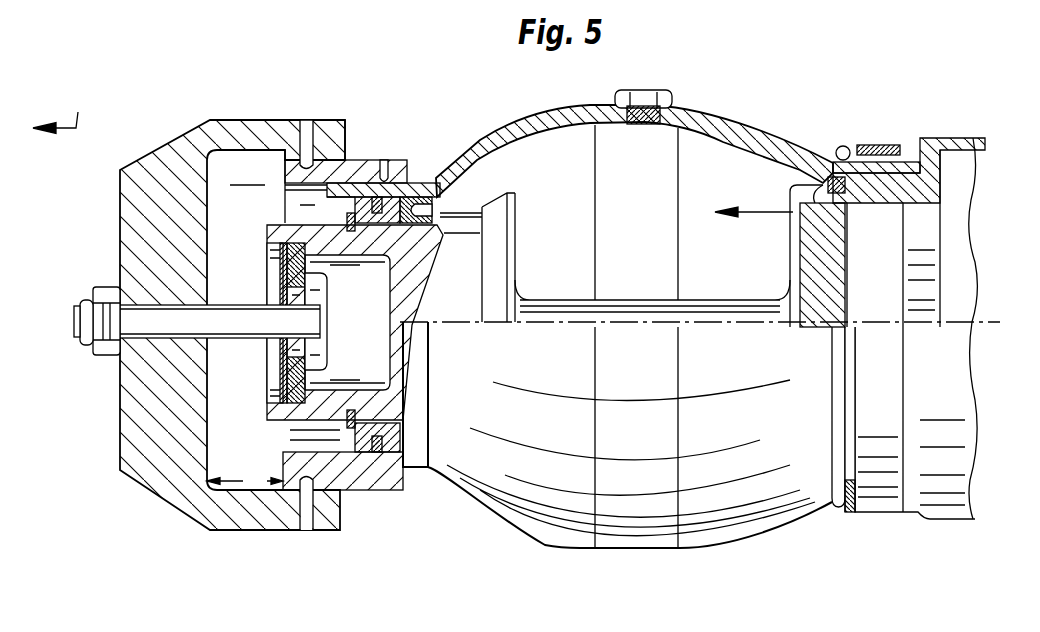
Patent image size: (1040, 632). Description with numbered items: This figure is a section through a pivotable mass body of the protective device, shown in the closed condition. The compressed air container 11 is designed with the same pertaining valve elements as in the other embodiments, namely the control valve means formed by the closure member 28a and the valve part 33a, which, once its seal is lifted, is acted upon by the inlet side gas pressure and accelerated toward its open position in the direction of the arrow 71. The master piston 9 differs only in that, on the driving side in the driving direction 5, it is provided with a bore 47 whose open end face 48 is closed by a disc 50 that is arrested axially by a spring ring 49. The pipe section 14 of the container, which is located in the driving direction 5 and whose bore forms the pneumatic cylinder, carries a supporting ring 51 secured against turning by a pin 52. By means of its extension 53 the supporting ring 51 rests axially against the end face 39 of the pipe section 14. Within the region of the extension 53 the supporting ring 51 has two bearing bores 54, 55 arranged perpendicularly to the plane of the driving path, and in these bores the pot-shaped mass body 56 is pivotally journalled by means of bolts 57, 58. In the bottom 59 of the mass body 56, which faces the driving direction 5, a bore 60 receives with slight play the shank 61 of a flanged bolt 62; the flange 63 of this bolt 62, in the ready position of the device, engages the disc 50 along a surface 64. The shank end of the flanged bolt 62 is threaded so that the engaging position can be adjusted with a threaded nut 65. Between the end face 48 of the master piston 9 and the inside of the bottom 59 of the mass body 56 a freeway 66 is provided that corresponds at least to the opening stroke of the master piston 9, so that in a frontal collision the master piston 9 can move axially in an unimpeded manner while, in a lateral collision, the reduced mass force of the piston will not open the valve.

The driving direction 5 is at (62, 108).
The master piston 9 is at (463, 285).
The compressed air container 11 is at (713, 447).
The pipe section 14 is at (367, 460).
The closure member 28a is at (935, 187).
The valve part 33a is at (823, 205).
The end face 39 is at (285, 197).
The bore 47 is at (366, 373).
The end face 48 is at (272, 375).
The spring ring 49 is at (282, 400).
The disc 50 is at (300, 393).
The supporting ring 51 is at (360, 165).
The pin 52 is at (385, 162).
The extension 53 is at (323, 178).
The bearing bore 54 is at (292, 152).
The bearing bore 55 is at (310, 493).
The mass body 56 is at (182, 163).
The bolt 57 is at (307, 137).
The bolt 58 is at (305, 520).
The bottom 59 is at (165, 207).
The bore 60 is at (173, 325).
The shank 61 is at (218, 330).
The flanged bolt 62 is at (90, 330).
The flange 63 is at (315, 327).
The surface 64 is at (305, 287).
The threaded nut 65 is at (105, 318).
The freeway 66 is at (245, 480).
The arrow 71 is at (757, 210).